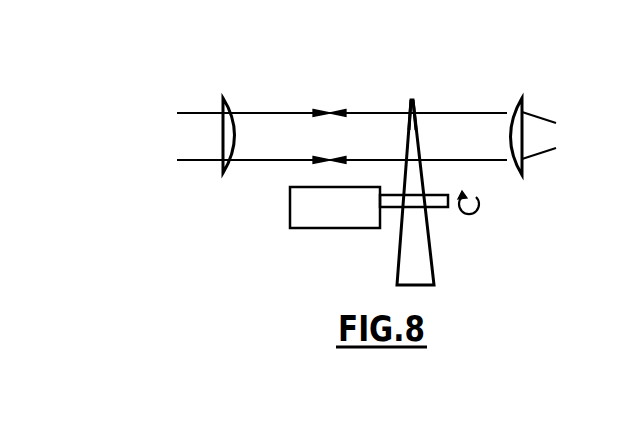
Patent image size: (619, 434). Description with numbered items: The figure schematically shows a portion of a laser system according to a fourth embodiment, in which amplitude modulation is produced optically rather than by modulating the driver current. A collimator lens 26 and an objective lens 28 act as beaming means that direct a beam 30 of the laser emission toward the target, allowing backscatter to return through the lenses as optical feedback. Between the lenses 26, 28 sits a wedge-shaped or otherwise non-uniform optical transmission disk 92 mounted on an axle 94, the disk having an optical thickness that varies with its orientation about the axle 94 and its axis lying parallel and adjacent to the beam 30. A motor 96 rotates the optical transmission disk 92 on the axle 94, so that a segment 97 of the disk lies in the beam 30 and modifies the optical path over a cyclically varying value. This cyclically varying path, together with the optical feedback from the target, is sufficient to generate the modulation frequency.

The collimator lens 26 is at (515, 102).
The objective lens 28 is at (227, 100).
The beam 30 is at (255, 113).
The optical transmission disk 92 is at (432, 242).
The axle 94 is at (393, 208).
The motor 96 is at (290, 205).
The segment 97 is at (404, 126).